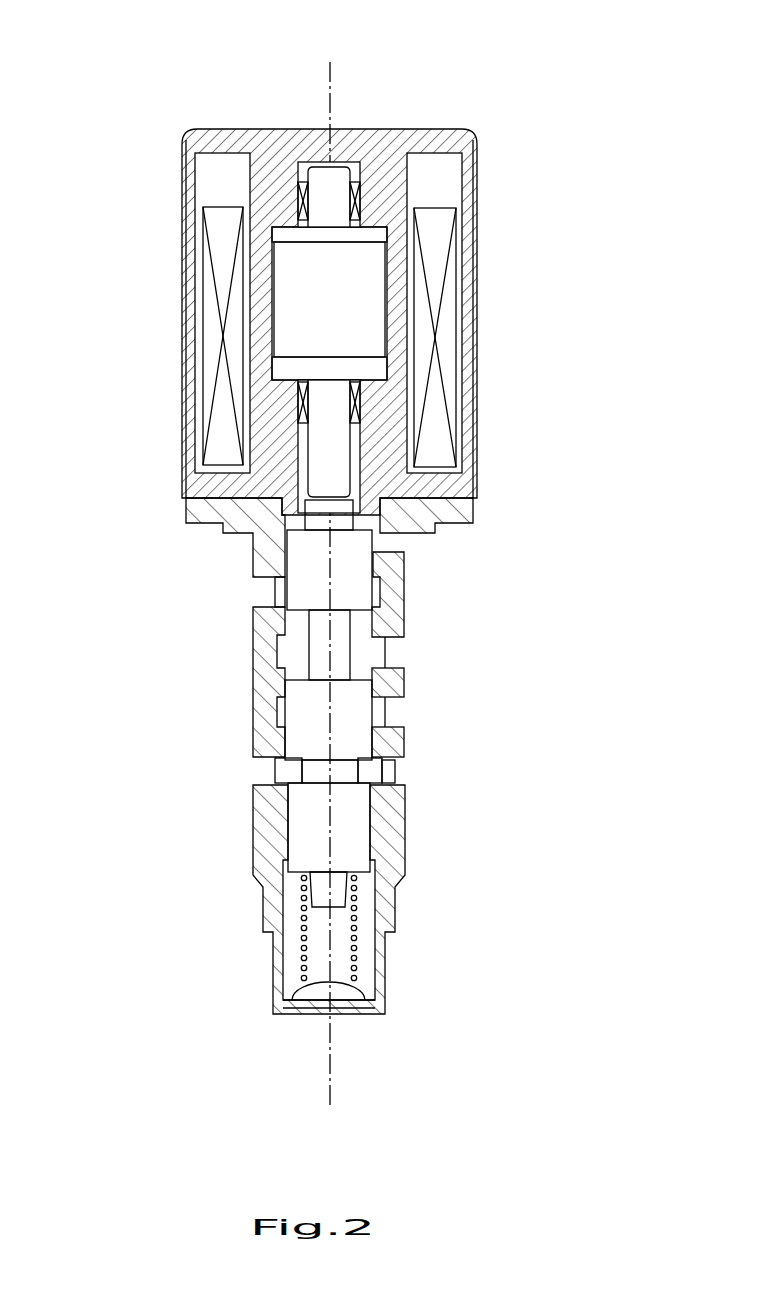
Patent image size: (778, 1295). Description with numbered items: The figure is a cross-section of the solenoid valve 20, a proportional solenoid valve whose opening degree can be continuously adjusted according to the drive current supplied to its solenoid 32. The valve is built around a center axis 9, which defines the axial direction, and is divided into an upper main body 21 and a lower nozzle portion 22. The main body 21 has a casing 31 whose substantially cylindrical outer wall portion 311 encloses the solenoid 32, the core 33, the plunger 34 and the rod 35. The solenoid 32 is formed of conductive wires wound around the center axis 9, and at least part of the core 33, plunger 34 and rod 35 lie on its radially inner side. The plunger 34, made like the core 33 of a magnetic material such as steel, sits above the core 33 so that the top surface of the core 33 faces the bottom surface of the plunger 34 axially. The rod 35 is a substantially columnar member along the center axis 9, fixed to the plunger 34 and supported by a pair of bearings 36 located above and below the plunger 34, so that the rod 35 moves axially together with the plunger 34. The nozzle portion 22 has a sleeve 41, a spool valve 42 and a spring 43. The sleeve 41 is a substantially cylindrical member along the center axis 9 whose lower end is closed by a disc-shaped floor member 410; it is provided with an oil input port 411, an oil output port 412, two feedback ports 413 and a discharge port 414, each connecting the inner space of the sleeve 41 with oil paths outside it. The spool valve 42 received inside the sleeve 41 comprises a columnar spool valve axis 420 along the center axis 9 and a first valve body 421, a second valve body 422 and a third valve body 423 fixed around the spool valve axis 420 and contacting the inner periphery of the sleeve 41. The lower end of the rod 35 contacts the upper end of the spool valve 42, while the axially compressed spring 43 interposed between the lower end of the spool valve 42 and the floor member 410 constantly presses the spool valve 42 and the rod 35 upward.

The solenoid valve 20 is at (422, 92).
The main body 21 is at (155, 229).
The nozzle portion 22 is at (238, 909).
The center axis 9 is at (330, 95).
The casing 31 is at (225, 143).
The outer wall portion 311 is at (475, 238).
The solenoid 32 is at (445, 330).
The core 33 is at (398, 428).
The plunger 34 is at (290, 298).
The rod 35 is at (318, 445).
The bearings 36 is at (360, 190).
The sleeve 41 is at (395, 863).
The spool valve 42 is at (320, 913).
The spring 43 is at (358, 948).
The floor member 410 is at (350, 1010).
The oil input port 411 is at (397, 653).
The oil output port 412 is at (397, 712).
The feedback ports 413 is at (263, 768).
The discharge port 414 is at (263, 592).
The spool valve axis 420 is at (315, 650).
The first valve body 421 is at (355, 585).
The second valve body 422 is at (315, 717).
The third valve body 423 is at (315, 837).